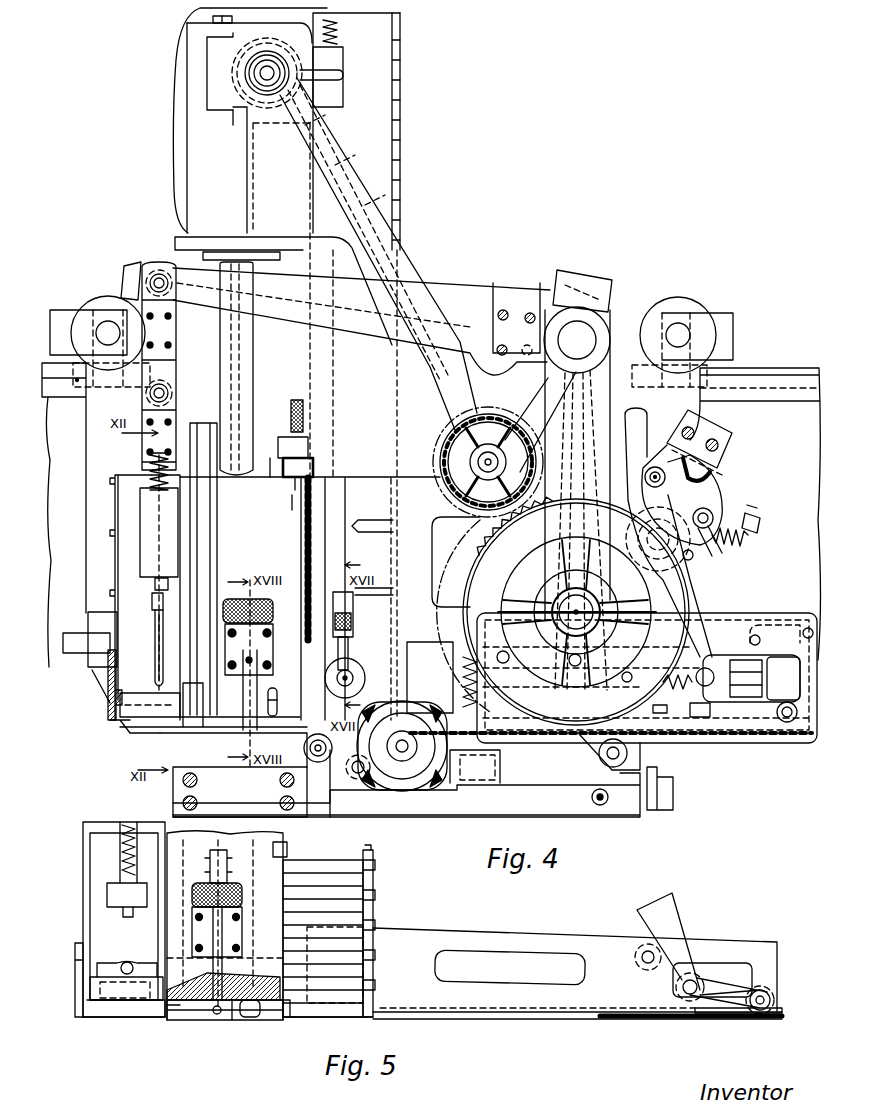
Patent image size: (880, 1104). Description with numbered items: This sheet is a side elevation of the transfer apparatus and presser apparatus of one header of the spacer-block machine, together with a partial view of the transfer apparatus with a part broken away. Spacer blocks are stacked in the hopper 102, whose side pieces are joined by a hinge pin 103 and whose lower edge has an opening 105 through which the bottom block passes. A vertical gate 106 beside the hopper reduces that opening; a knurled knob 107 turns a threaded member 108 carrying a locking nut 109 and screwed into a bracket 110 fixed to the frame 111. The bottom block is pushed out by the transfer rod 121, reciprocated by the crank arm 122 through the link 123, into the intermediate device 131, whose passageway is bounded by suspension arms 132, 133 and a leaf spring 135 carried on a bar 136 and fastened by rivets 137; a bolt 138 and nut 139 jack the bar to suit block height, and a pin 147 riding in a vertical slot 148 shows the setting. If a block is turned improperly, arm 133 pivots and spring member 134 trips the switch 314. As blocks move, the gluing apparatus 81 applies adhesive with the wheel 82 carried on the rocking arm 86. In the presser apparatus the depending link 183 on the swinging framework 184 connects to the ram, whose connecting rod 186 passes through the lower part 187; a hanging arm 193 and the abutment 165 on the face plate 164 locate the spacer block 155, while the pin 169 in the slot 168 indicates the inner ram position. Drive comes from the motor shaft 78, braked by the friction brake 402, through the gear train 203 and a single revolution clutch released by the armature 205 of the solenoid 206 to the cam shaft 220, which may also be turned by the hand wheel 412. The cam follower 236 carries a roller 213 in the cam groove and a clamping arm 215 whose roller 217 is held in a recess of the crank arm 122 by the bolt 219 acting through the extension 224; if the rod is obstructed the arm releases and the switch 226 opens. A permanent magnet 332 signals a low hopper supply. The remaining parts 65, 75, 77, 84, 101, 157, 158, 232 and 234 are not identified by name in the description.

In FIG. 4, the friction brake 402 is at (208, 57).
In FIG. 4, the drive shaft 78 is at (262, 78).
In FIG. 4, the hopper 102 is at (392, 77).
In FIG. 5, the hopper 102 is at (348, 860).
In FIG. 4, the hinge pin 103 is at (400, 126).
In FIG. 5, the hinge pin 103 is at (375, 890).
In FIG. 4, the gear train 203 is at (333, 170).
In FIG. 4, the swinging framework 184 is at (132, 263).
In FIG. 4, the plate 234 is at (460, 300).
In FIG. 4, the roller 75 is at (96, 306).
In FIG. 4, the frame 65 is at (770, 366).
In FIG. 4, the slanted plate 232 is at (283, 322).
In FIG. 4, the depending link 183 is at (176, 405).
In FIG. 4, the knurled knob 107 is at (290, 398).
In FIG. 4, the bracket 110 is at (285, 437).
In FIG. 4, the frame 111 is at (262, 477).
In FIG. 5, the frame 111 is at (205, 848).
In FIG. 4, the gate 106 is at (314, 470).
In FIG. 5, the gate 106 is at (285, 850).
In FIG. 4, the connecting rod 186 is at (148, 470).
In FIG. 4, the lower part 187 is at (140, 505).
In FIG. 4, the threaded member 108 is at (288, 478).
In FIG. 4, the locking nut 109 is at (292, 500).
In FIG. 4, the switch 226 is at (730, 432).
In FIG. 4, the cam follower 236 is at (770, 456).
In FIG. 4, the clamping arm 215 is at (708, 492).
In FIG. 4, the roller 217 is at (712, 514).
In FIG. 4, the bolt 219 is at (758, 522).
In FIG. 4, the extension 224 is at (730, 548).
In FIG. 4, the toothed wheel 77 is at (480, 554).
In FIG. 4, the roller 213 is at (548, 555).
In FIG. 4, the hand wheel 412 is at (474, 572).
In FIG. 4, the cam shaft 220 is at (478, 614).
In FIG. 4, the crank arm 122 is at (700, 604).
In FIG. 4, the solenoid 206 is at (782, 663).
In FIG. 4, the armature 205 is at (736, 660).
In FIG. 4, the face plate 164 is at (117, 570).
In FIG. 4, the nut 139 is at (225, 598).
In FIG. 4, the switch 314 is at (260, 600).
In FIG. 4, the pin 169 is at (154, 598).
In FIG. 4, the slot 168 is at (155, 650).
In FIG. 4, the permanent magnet 332 is at (352, 666).
In FIG. 4, the pulley 84 is at (398, 706).
In FIG. 4, the vertical slot 148 is at (278, 692).
In FIG. 4, the pin 147 is at (278, 700).
In FIG. 4, the spring member 134 is at (243, 690).
In FIG. 4, the abutment 165 is at (105, 710).
In FIG. 5, the abutment 165 is at (75, 952).
In FIG. 4, the spacer block 155 is at (122, 732).
In FIG. 5, the spacer block 155 is at (82, 1017).
In FIG. 4, the suspension arm 133 is at (228, 757).
In FIG. 4, the adhesive applying wheel 82 is at (305, 747).
In FIG. 4, the rocking arm 86 is at (472, 745).
In FIG. 4, the gluing apparatus 81 is at (565, 781).
In FIG. 4, the rod 121 is at (665, 740).
In FIG. 4, the base plate 101 is at (760, 768).
In FIG. 5, the bolt 138 is at (225, 848).
In FIG. 5, the pin 158 is at (128, 962).
In FIG. 5, the hanging arm 193 is at (90, 1017).
In FIG. 5, the box 157 is at (125, 1017).
In FIG. 5, the suspension arm 132 is at (175, 1022).
In FIG. 5, the intermediate device 131 is at (203, 1022).
In FIG. 5, the leaf spring 135 is at (212, 1022).
In FIG. 5, the bar 136 is at (240, 1022).
In FIG. 5, the rivets 137 is at (256, 1020).
In FIG. 5, the opening 105 is at (288, 1020).
In FIG. 5, the link 123 is at (717, 983).